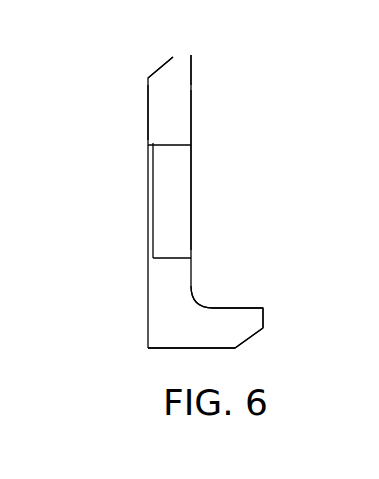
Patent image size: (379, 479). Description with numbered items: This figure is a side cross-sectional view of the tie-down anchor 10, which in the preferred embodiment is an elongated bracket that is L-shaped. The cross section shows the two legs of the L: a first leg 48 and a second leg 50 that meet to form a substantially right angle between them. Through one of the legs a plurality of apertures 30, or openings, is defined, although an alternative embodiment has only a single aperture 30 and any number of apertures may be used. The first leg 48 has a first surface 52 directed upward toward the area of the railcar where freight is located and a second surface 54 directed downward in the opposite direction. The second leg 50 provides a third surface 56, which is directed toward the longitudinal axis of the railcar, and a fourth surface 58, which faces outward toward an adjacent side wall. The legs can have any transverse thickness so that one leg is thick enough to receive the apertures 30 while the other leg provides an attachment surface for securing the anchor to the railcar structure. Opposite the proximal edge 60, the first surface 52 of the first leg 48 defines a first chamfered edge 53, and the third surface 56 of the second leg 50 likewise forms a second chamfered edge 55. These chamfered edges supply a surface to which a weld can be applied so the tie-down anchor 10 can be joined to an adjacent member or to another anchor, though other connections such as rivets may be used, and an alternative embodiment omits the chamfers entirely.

The tie-down anchor 10 is at (143, 204).
The aperture 30 is at (153, 172).
The first leg 48 is at (185, 113).
The second leg 50 is at (223, 320).
The first surface 52 is at (148, 93).
The first chamfered edge 53 is at (162, 70).
The second surface 54 is at (191, 78).
The second chamfered edge 55 is at (253, 333).
The third surface 56 is at (235, 350).
The fourth surface 58 is at (253, 305).
The proximal edge 60 is at (148, 348).